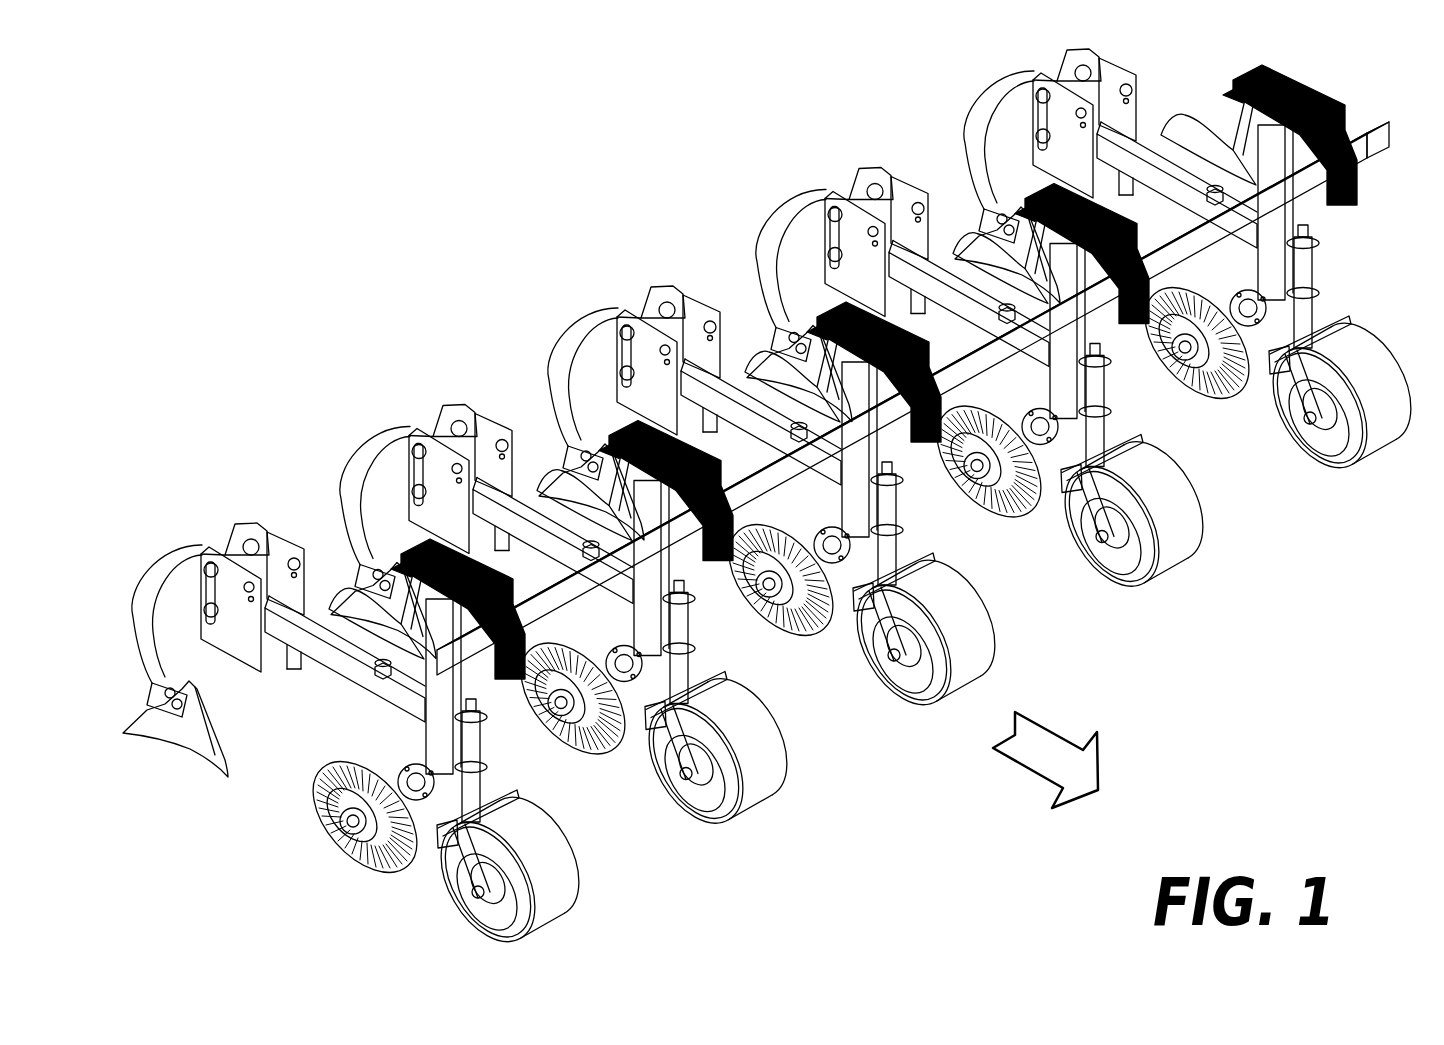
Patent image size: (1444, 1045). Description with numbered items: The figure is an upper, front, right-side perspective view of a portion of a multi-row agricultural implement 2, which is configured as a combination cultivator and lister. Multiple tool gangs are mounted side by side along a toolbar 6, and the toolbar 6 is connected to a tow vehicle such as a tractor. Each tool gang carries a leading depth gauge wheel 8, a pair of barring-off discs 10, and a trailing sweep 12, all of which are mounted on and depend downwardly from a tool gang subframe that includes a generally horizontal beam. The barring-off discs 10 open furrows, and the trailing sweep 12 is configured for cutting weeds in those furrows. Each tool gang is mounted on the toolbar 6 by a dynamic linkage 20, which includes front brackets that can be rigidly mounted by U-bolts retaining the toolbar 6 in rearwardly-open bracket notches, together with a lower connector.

The multi-row agricultural implement 2 is at (498, 220).
The toolbar 6 is at (1383, 120).
The leading depth gauge wheel 8 is at (1320, 437).
The barring-off discs 10 is at (347, 816).
The trailing sweep 12 is at (176, 759).
The dynamic linkage 20 is at (1257, 112).